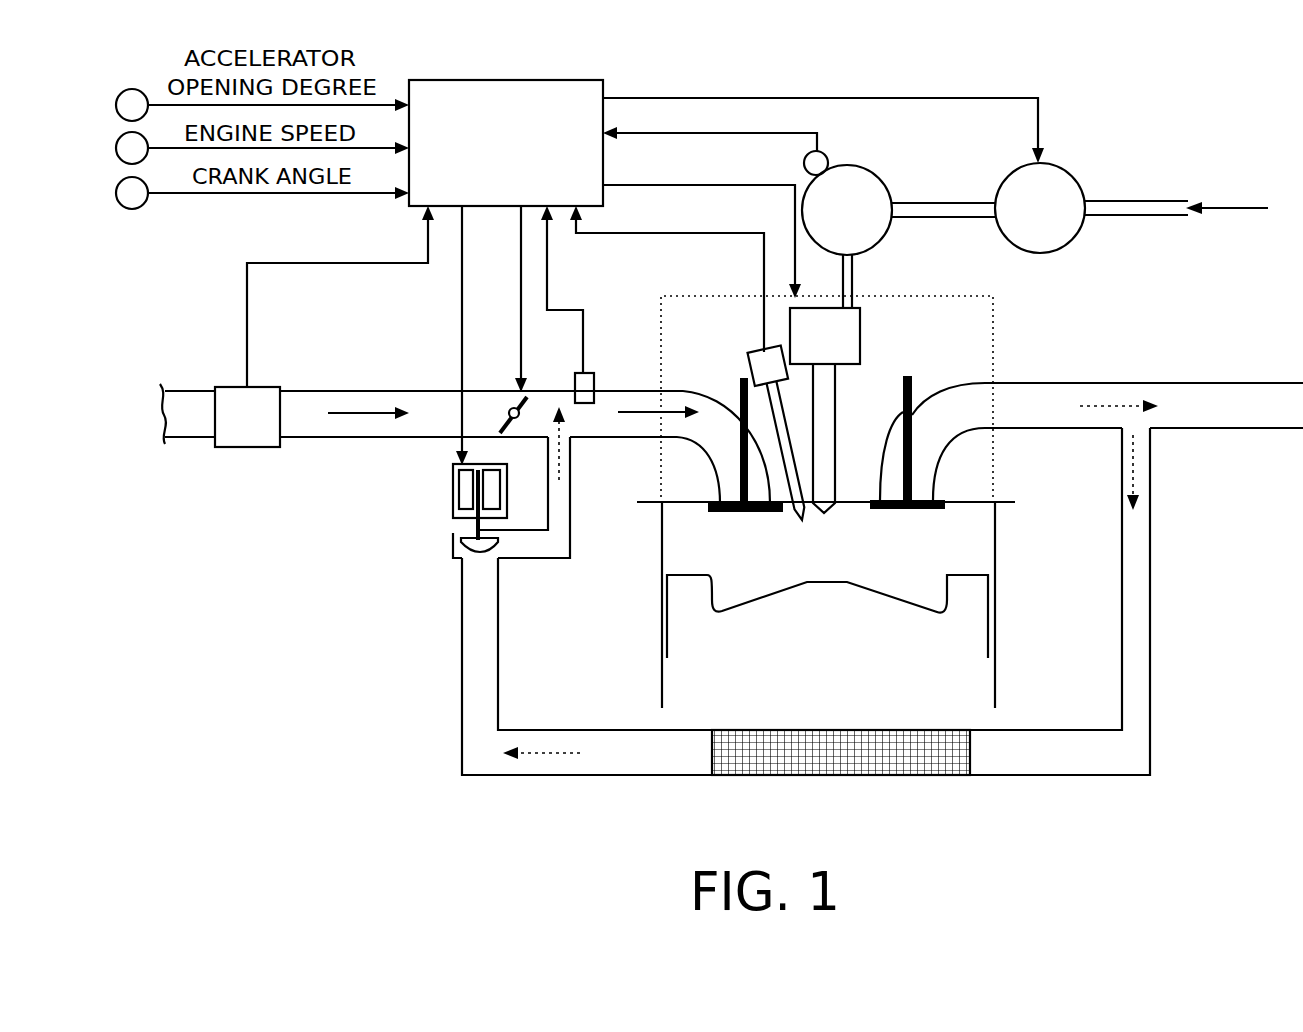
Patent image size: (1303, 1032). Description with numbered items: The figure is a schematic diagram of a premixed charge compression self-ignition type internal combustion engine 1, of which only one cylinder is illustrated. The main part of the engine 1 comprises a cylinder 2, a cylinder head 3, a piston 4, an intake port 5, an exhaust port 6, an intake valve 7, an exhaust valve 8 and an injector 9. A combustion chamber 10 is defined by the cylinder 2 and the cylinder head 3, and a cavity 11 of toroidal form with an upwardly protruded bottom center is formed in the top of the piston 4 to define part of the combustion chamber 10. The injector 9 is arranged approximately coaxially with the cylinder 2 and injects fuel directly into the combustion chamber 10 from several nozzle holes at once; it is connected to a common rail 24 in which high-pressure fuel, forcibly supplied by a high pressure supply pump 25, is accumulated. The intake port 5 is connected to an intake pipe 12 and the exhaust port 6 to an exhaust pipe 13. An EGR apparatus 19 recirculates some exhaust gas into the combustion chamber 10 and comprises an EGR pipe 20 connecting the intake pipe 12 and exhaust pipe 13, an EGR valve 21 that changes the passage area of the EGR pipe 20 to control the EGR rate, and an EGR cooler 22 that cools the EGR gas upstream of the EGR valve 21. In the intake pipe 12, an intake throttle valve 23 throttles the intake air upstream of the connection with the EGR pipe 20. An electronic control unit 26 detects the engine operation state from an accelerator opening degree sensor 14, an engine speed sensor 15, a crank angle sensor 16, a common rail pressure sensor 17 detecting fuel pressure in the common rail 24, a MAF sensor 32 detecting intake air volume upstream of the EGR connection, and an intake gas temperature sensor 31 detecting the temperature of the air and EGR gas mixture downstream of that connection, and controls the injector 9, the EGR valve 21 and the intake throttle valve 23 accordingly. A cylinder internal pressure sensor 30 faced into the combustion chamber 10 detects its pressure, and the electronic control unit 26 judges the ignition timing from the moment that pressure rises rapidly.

The engine 1 is at (640, 630).
The cylinder 2 is at (990, 548).
The cylinder head 3 is at (972, 503).
The piston 4 is at (955, 638).
The intake port 5 is at (718, 435).
The exhaust port 6 is at (946, 412).
The intake valve 7 is at (737, 397).
The exhaust valve 8 is at (900, 407).
The injector 9 is at (850, 338).
The combustion chamber 10 is at (703, 550).
The cavity 11 is at (878, 590).
The intake pipe 12 is at (297, 390).
The exhaust pipe 13 is at (1258, 382).
The accelerator opening degree sensor 14 is at (116, 100).
The engine speed sensor 15 is at (117, 148).
The crank angle sensor 16 is at (117, 190).
The common rail pressure sensor 17 is at (827, 156).
The EGR apparatus 19 is at (400, 503).
The EGR pipe 20 is at (1045, 775).
The EGR valve 21 is at (453, 477).
The EGR cooler 22 is at (845, 757).
The intake throttle valve 23 is at (516, 396).
The common rail 24 is at (888, 232).
The high pressure supply pump 25 is at (1080, 232).
The electronic control unit 26 is at (540, 80).
The cylinder internal pressure sensor 30 is at (757, 358).
The intake gas temperature sensor 31 is at (594, 383).
The MAF sensor 32 is at (250, 447).